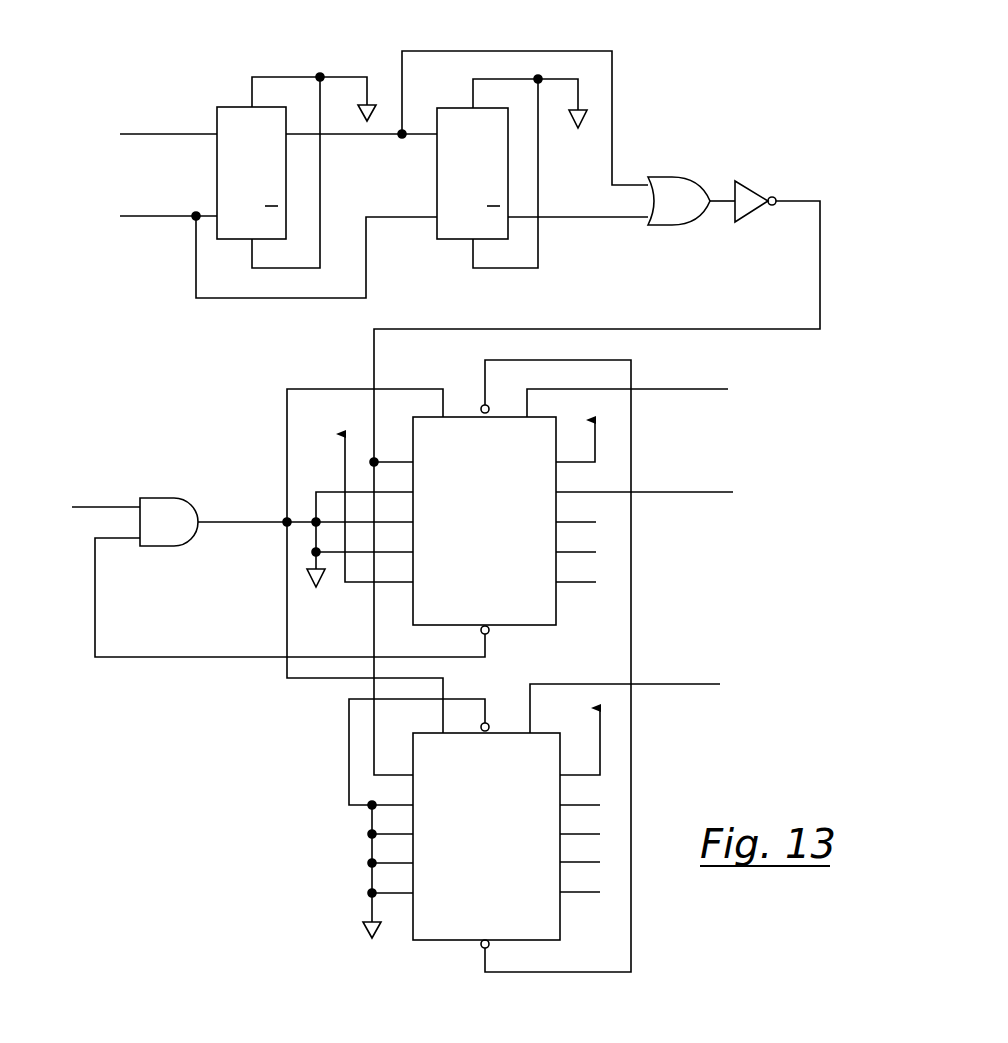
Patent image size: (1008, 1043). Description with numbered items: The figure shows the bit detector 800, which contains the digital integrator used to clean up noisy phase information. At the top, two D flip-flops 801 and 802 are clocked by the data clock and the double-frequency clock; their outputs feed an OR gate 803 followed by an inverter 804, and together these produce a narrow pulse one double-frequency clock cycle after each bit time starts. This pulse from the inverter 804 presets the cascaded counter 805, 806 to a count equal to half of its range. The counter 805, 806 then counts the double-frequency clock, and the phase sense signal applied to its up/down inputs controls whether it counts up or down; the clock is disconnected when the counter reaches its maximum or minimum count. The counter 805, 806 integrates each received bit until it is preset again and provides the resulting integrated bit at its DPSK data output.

The bit detector 800 is at (853, 268).
The D flip-flop 801 is at (237, 107).
The D flip-flop 802 is at (458, 107).
The OR gate 803 is at (680, 178).
The inverter 804 is at (756, 181).
The counter 805 is at (560, 612).
The counter 806 is at (560, 927).